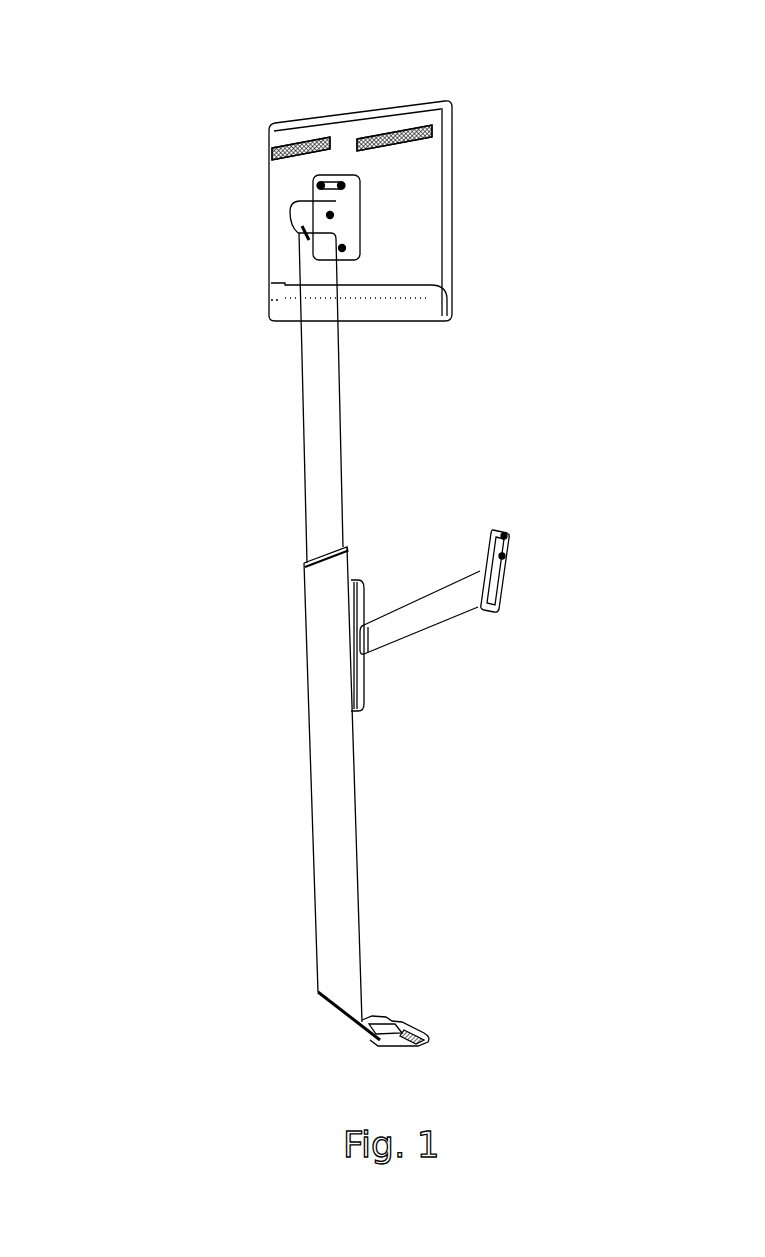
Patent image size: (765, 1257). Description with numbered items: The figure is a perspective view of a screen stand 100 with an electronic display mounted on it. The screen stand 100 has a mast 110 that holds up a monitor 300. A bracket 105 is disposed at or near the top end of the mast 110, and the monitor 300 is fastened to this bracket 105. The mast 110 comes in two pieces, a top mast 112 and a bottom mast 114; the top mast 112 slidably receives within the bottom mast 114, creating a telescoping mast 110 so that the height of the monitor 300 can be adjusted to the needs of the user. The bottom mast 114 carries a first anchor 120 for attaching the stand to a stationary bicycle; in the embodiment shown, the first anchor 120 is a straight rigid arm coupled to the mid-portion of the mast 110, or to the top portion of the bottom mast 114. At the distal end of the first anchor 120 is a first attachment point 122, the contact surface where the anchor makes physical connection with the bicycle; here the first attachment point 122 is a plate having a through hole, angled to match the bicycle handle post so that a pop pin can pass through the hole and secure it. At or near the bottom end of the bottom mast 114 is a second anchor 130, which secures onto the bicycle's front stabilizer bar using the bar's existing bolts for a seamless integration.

The screen stand 100 is at (127, 97).
The monitor 300 is at (278, 172).
The bracket 105 is at (340, 211).
The mast 110 is at (292, 573).
The top mast 112 is at (315, 460).
The bottom mast 114 is at (328, 823).
The first anchor 120 is at (428, 603).
The first attachment point 122 is at (505, 533).
The second anchor 130 is at (407, 1033).